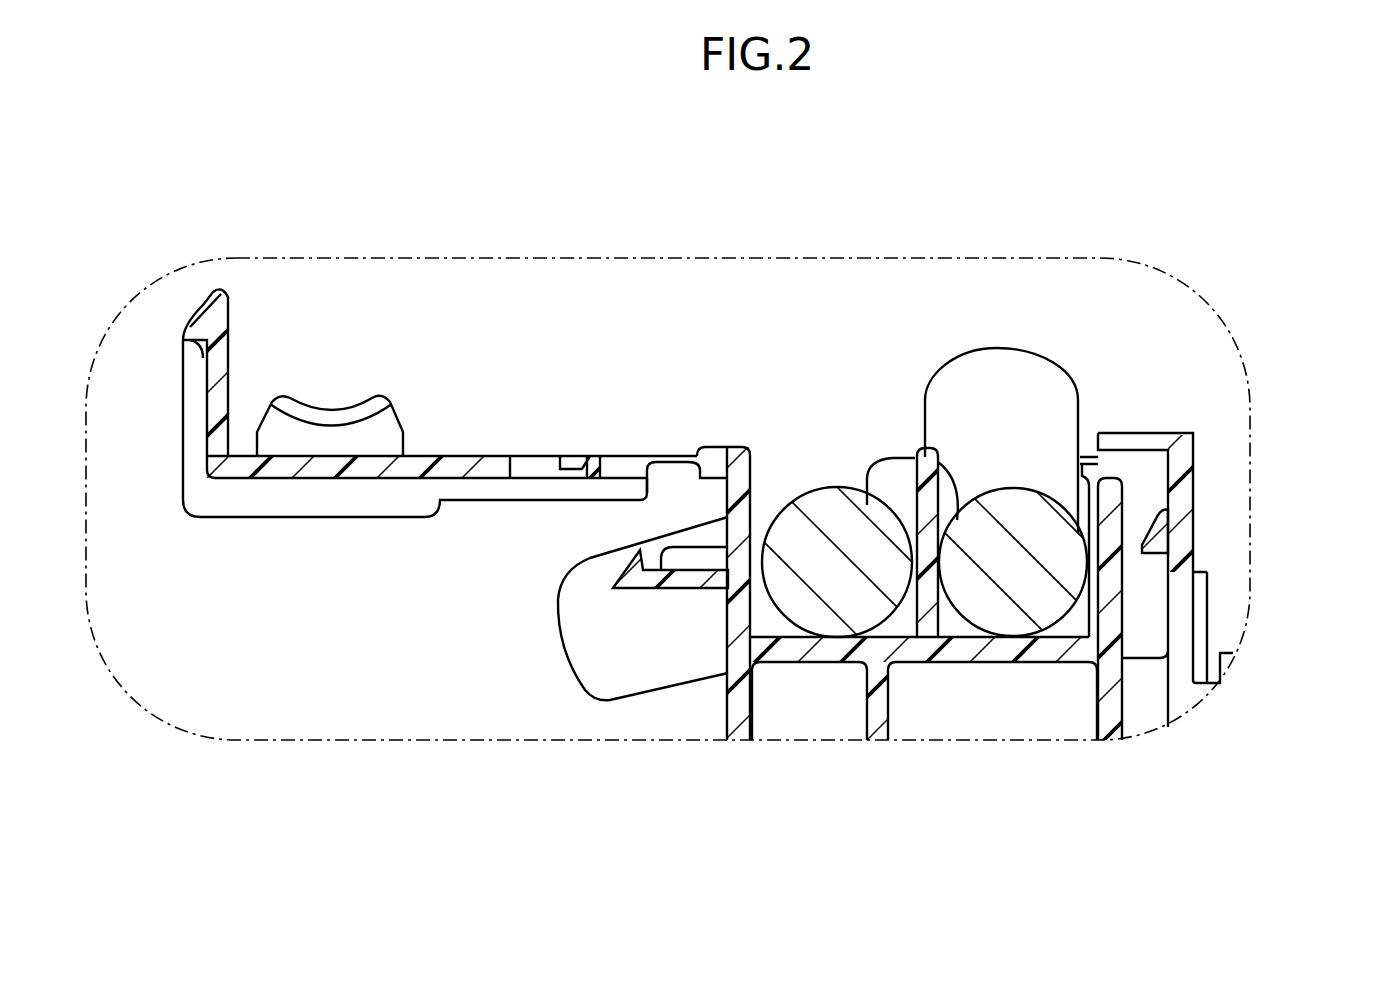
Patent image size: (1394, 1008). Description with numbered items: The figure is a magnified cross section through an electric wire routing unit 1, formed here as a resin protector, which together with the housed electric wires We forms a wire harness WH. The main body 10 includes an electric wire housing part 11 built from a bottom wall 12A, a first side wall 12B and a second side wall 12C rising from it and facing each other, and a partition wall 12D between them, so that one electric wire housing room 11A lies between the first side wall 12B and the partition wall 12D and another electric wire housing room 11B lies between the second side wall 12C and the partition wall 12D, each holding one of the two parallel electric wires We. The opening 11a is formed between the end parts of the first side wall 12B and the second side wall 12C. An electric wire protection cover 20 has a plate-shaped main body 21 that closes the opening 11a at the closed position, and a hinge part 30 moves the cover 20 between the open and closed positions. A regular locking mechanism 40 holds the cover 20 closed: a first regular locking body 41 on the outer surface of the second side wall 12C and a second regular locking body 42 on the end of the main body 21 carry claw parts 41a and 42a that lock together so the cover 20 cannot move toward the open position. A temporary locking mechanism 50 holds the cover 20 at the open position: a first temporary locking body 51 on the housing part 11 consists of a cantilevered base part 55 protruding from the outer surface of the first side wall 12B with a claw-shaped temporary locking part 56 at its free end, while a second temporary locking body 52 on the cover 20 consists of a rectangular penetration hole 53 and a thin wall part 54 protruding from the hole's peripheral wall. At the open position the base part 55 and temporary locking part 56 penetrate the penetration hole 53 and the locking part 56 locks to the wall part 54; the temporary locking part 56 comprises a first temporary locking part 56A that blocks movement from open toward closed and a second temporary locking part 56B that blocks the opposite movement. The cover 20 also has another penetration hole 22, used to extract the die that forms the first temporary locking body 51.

The electric wire routing unit 1 is at (697, 512).
The wire harness WH is at (731, 436).
The main body 10 is at (1298, 566).
The electric wire housing part 11 is at (933, 646).
The electric wire housing room 11A is at (902, 620).
The electric wire housing room 11B is at (1082, 620).
The opening 11a is at (833, 453).
The electric wire We is at (933, 646).
The bottom wall 12A is at (798, 663).
The first side wall 12B is at (762, 492).
The second side wall 12C is at (1125, 505).
The partition wall 12D is at (974, 500).
The electric wire protection cover 20 is at (377, 538).
The main body 21 is at (457, 455).
The penetration hole 22 is at (718, 450).
The hinge part 30 is at (676, 455).
The regular locking mechanism 40 is at (697, 500).
The first regular locking body 41 is at (1105, 500).
The claw part 41a is at (1152, 520).
The second regular locking body 42 is at (221, 500).
The claw part 42a is at (184, 362).
The temporary locking mechanism 50 is at (678, 541).
The first temporary locking body 51 is at (744, 541).
The second temporary locking body 52 is at (568, 500).
The penetration hole 53 is at (532, 470).
The wall part 54 is at (575, 462).
The base part 55 is at (676, 590).
The temporary locking part 56 is at (744, 513).
The first temporary locking part 56A is at (623, 558).
The second temporary locking part 56B is at (702, 558).